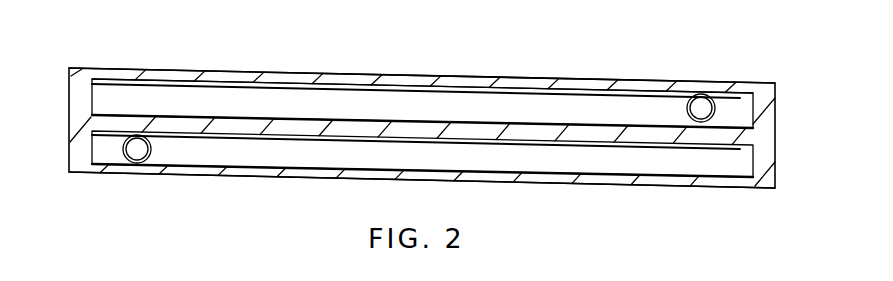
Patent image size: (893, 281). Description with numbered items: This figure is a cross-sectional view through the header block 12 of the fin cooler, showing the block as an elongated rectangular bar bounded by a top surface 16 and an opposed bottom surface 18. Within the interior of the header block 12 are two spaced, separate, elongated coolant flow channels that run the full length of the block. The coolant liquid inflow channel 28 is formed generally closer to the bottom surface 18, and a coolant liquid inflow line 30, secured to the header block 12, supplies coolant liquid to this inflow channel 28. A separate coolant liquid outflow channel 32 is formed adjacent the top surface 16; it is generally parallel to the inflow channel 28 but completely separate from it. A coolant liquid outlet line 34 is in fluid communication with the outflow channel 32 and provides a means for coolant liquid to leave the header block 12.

The header block 12 is at (255, 62).
The top surface 16 is at (573, 82).
The bottom surface 18 is at (613, 186).
The coolant liquid inflow channel 28 is at (436, 163).
The coolant liquid inflow line 30 is at (126, 166).
The coolant liquid outflow channel 32 is at (436, 114).
The coolant liquid outlet line 34 is at (713, 93).